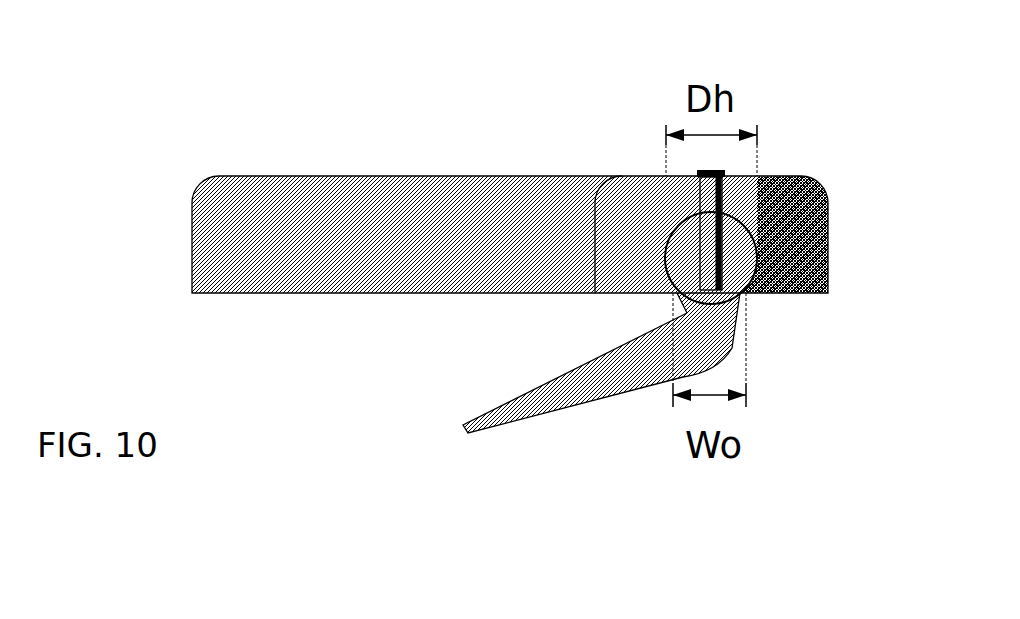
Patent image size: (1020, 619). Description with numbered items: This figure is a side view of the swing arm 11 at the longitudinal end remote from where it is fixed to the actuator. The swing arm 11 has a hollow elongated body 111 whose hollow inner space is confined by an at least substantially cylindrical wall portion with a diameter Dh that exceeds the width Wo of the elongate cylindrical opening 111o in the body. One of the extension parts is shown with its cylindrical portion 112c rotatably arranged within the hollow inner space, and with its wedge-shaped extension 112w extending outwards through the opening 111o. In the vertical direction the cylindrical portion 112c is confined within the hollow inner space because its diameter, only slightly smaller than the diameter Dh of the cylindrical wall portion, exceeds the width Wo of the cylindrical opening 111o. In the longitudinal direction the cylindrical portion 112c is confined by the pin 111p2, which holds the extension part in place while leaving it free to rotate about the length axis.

The swing arm 11 is at (350, 210).
The hollow elongated body 111 is at (592, 176).
The cylindrical opening 111o is at (653, 288).
The pin 111p2 is at (793, 177).
The wedge-shaped extension 112w is at (545, 413).
The cylindrical portion 112c is at (767, 295).